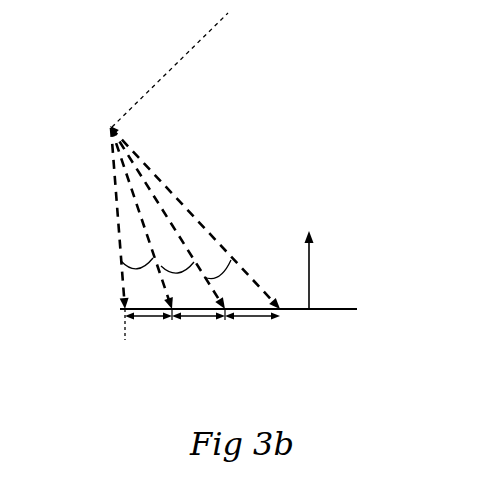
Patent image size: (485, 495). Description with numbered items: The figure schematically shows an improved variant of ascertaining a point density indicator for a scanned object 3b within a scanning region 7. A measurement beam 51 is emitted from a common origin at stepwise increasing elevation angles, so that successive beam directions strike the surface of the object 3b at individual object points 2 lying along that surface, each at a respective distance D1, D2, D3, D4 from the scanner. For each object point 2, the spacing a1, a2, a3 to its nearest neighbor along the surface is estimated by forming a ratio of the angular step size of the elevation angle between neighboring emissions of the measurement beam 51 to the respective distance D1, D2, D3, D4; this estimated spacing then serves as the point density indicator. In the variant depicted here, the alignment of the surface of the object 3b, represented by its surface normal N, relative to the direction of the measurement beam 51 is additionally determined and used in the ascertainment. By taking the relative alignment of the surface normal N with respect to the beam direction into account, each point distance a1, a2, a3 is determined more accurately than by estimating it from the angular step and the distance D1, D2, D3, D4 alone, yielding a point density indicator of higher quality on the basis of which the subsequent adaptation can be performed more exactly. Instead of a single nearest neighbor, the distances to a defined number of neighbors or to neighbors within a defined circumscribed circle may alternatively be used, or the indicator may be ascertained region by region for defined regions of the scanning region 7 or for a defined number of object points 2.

The scanning region 7 is at (214, 90).
The distance D1 is at (116, 197).
The distance D2 is at (122, 167).
The distance D3 is at (130, 184).
The distance D4 is at (166, 188).
The measurement beam 51 is at (177, 232).
The surface normal N is at (309, 273).
The object 3b is at (298, 309).
The distance to nearest neighbor a1 is at (152, 318).
The distance to nearest neighbor a2 is at (205, 316).
The distance to nearest neighbor a3 is at (252, 316).
The object point 2 is at (175, 316).